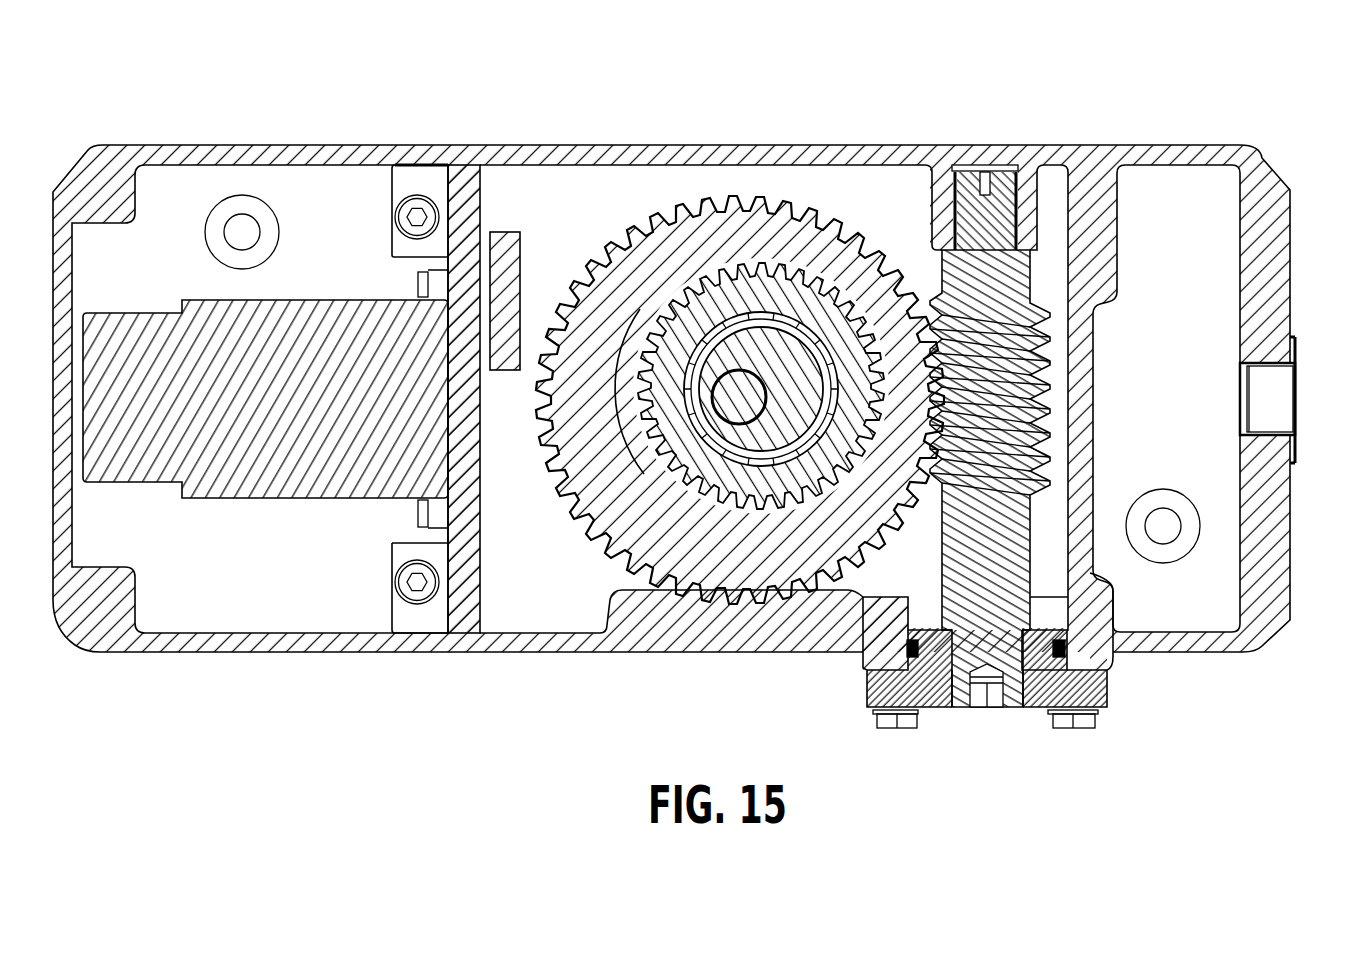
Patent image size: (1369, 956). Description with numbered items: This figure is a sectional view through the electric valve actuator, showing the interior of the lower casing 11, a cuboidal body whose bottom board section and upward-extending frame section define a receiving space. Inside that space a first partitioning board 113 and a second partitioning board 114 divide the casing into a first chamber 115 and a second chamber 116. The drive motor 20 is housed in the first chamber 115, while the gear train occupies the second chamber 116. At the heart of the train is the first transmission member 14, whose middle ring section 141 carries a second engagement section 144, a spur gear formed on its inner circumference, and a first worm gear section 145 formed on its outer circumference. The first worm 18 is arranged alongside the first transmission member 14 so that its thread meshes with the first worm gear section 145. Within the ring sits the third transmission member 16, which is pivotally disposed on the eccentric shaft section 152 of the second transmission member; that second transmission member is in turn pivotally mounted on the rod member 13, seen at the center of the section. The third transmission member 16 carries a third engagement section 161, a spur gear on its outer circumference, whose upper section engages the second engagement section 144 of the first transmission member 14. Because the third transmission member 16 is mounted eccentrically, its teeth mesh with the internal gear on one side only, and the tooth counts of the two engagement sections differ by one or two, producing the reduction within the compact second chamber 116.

The lower casing 11 is at (224, 137).
The first partitioning board 113 is at (464, 200).
The second partitioning board 114 is at (1098, 257).
The first chamber 115 is at (280, 582).
The second chamber 116 is at (885, 223).
The rod member 13 is at (733, 398).
The first transmission member 14 is at (582, 462).
The middle ring section 141 is at (757, 237).
The second engagement section 144 is at (612, 335).
The first worm gear section 145 is at (637, 227).
The eccentric shaft section 152 is at (800, 397).
The third transmission member 16 is at (680, 430).
The third engagement section 161 is at (650, 367).
The first worm 18 is at (1030, 550).
The drive motor 20 is at (152, 450).